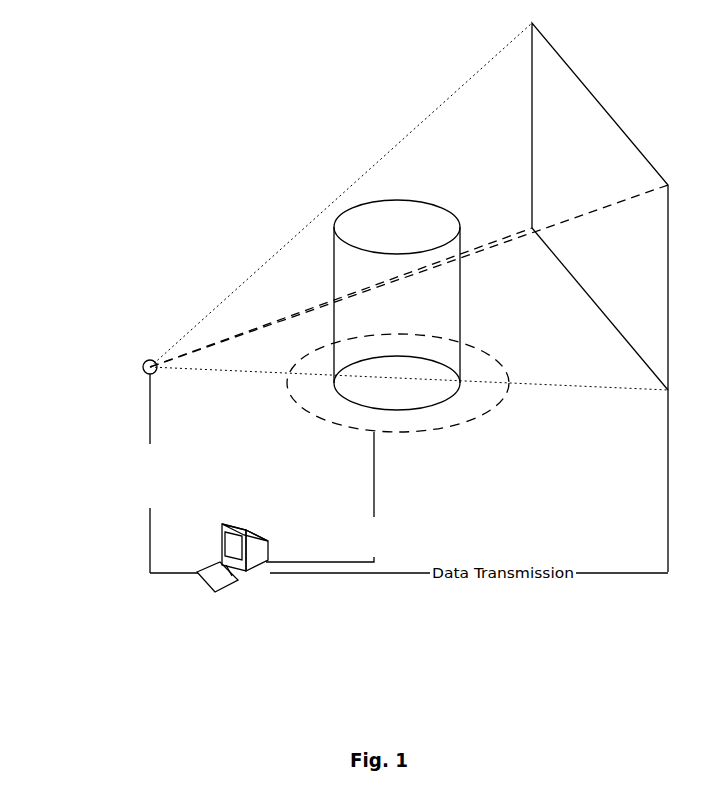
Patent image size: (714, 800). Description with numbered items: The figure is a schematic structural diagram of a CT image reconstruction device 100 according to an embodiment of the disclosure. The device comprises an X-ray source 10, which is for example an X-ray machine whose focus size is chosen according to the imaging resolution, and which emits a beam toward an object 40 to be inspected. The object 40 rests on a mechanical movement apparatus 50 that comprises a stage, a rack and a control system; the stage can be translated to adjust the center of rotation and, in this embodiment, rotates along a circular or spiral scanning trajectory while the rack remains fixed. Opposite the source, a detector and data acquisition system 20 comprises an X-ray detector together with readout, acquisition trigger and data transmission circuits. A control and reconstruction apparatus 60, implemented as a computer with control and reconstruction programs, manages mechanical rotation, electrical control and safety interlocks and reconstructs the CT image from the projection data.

The X-ray computed tomography system 100 is at (241, 115).
The X-ray source 10 is at (143, 367).
The detector and data acquisition system 20 is at (562, 63).
The object to be inspected 40 is at (393, 202).
The mechanical movement apparatus 50 is at (430, 432).
The control and reconstruction apparatus 60 is at (250, 523).